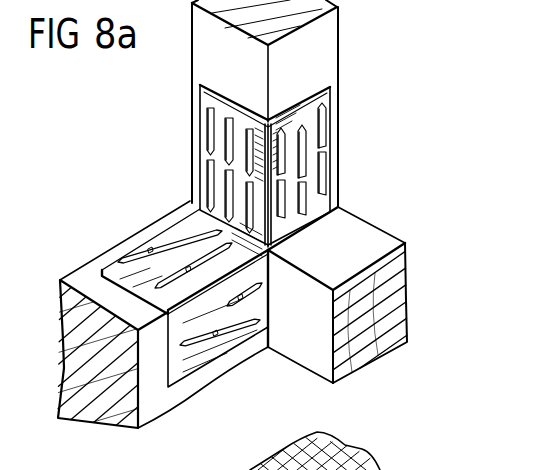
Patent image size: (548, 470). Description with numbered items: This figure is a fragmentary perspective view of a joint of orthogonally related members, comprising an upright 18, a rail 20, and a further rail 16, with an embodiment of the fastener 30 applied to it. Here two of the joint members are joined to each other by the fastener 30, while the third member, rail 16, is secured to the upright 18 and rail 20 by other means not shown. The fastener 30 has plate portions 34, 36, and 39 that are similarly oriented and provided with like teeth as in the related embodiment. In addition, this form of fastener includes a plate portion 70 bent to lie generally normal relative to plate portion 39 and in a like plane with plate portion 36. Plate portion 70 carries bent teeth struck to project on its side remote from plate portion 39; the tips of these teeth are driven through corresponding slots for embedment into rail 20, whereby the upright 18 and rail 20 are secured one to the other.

The rail 16 is at (368, 343).
The upright 18 is at (318, 62).
The rail 20 is at (98, 382).
The fastener 30 is at (176, 193).
The plate portion 34 is at (205, 137).
The plate portion 36 is at (327, 177).
The plate portion 39 is at (117, 262).
The plate portion 70 is at (158, 367).